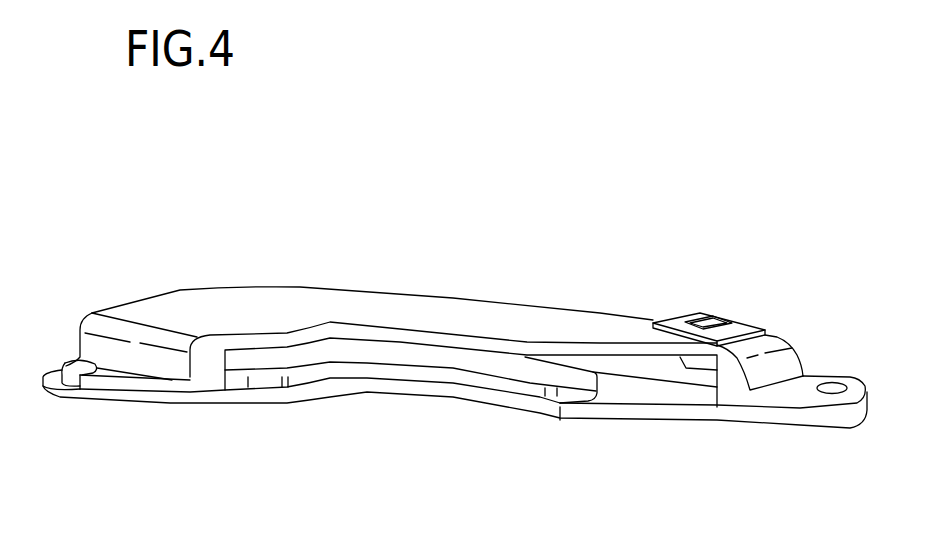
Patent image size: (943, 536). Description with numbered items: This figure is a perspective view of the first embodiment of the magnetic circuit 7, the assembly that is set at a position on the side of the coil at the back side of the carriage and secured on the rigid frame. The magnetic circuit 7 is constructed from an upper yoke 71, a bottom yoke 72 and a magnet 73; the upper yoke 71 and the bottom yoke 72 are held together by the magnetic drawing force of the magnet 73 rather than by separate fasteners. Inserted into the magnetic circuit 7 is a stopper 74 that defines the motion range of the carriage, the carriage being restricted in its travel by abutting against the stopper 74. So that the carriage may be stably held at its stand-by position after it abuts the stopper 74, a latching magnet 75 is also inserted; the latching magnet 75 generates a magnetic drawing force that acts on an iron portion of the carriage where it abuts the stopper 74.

The magnetic circuit 7 is at (403, 290).
The upper yoke 71 is at (92, 348).
The bottom yoke 72 is at (147, 400).
The magnet 73 is at (440, 380).
The stopper 74 is at (677, 312).
The latching magnet 75 is at (708, 322).